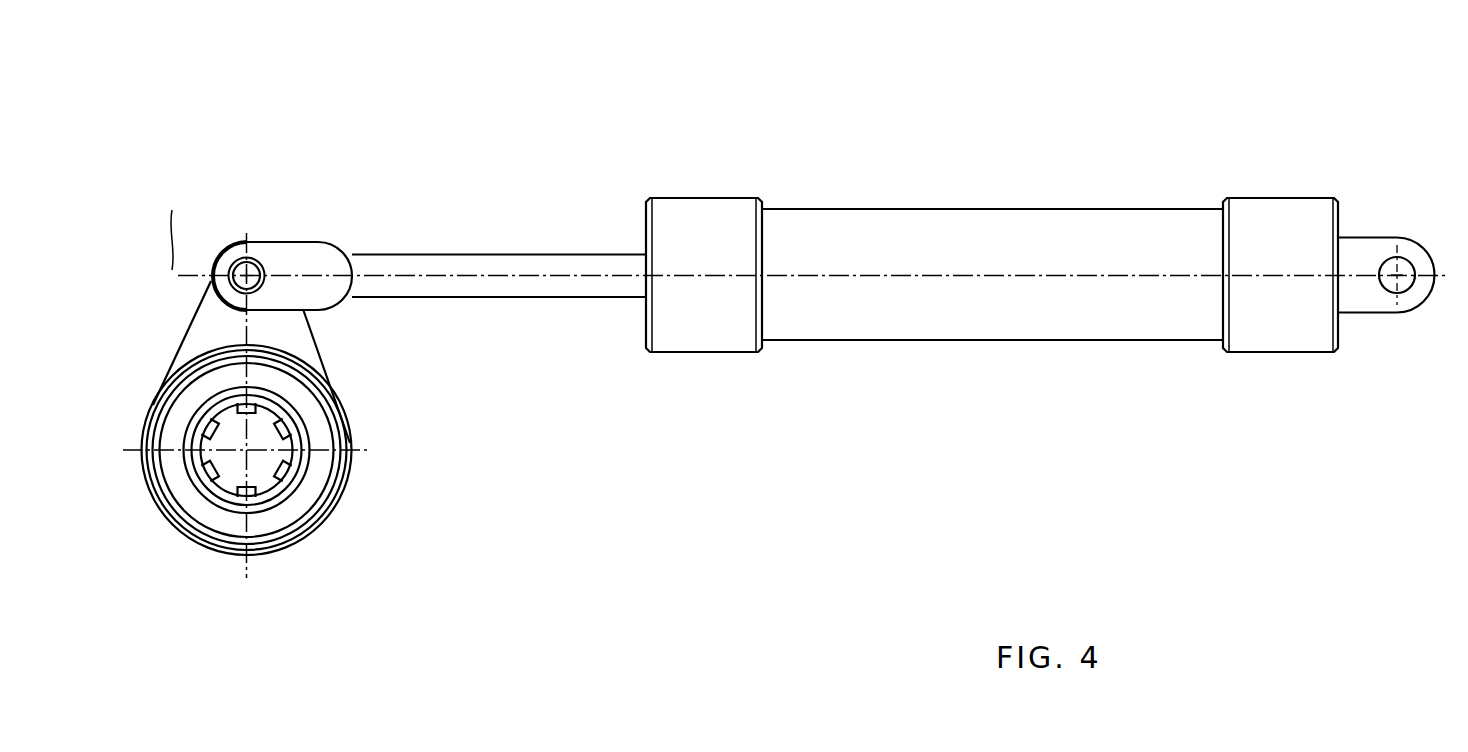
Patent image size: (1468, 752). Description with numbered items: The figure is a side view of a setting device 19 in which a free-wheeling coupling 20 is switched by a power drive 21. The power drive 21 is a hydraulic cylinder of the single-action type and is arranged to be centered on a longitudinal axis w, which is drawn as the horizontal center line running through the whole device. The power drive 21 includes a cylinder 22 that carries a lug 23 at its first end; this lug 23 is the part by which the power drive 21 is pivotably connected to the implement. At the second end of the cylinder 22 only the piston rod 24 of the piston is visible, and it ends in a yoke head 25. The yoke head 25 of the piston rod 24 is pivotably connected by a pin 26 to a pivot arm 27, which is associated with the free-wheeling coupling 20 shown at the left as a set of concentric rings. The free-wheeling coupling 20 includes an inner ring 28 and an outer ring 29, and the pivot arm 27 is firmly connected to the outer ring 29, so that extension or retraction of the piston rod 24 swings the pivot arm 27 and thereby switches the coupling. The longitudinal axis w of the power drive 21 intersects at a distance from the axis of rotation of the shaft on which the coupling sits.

The setting device 19 is at (798, 43).
The free-wheeling coupling 20 is at (283, 557).
The power drive 21 is at (840, 210).
The cylinder 22 is at (1061, 342).
The lug 23 is at (1390, 313).
The piston rod 24 is at (479, 262).
The yoke head 25 is at (313, 255).
The pin 26 is at (248, 256).
The pivot arm 27 is at (310, 348).
The inner ring 28 is at (295, 432).
The outer ring 29 is at (305, 502).